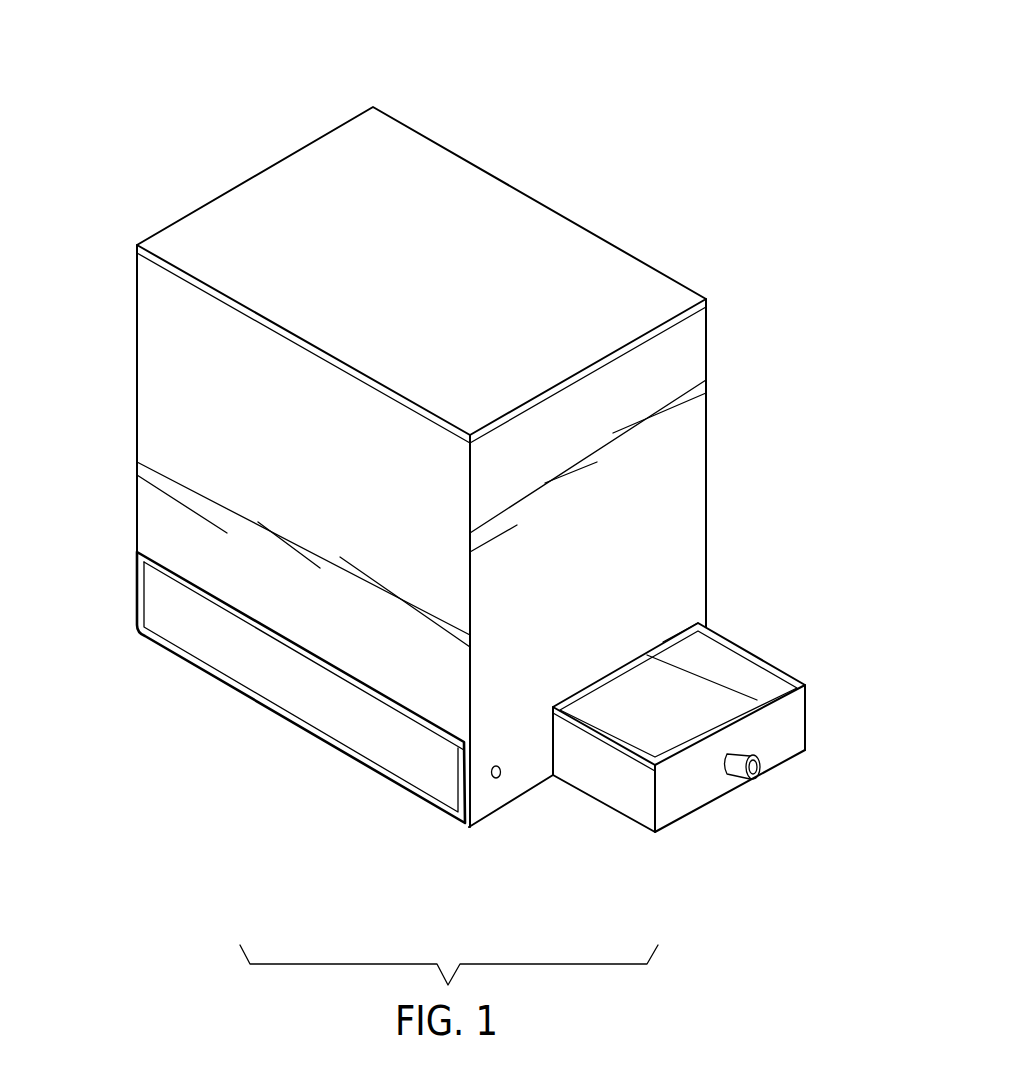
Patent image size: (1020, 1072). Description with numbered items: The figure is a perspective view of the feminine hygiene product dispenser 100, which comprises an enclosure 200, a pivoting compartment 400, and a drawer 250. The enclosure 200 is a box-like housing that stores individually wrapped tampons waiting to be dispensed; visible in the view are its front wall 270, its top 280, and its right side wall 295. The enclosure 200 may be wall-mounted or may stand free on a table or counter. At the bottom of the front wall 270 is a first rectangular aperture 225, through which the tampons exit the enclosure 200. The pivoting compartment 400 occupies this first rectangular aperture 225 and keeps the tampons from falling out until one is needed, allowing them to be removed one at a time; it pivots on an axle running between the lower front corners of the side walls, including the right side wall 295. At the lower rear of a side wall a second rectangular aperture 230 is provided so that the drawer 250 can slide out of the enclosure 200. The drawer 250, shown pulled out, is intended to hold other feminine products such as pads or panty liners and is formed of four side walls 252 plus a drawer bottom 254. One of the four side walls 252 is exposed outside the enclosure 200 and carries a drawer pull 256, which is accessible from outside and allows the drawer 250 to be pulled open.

The feminine hygiene product dispenser 100 is at (641, 146).
The enclosure 200 is at (127, 598).
The top 280 is at (505, 224).
The front wall 270 is at (280, 405).
The right side wall 295 is at (693, 444).
The second rectangular aperture 230 is at (663, 642).
The first rectangular aperture 225 is at (181, 653).
The pivoting compartment 400 is at (390, 747).
The drawer 250 is at (637, 803).
The four side walls 252 is at (620, 740).
The drawer bottom 254 is at (667, 740).
The drawer pull 256 is at (735, 782).